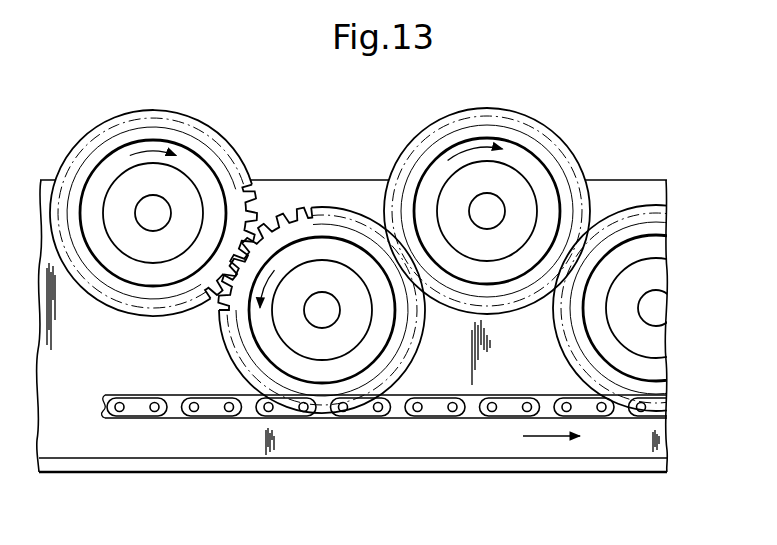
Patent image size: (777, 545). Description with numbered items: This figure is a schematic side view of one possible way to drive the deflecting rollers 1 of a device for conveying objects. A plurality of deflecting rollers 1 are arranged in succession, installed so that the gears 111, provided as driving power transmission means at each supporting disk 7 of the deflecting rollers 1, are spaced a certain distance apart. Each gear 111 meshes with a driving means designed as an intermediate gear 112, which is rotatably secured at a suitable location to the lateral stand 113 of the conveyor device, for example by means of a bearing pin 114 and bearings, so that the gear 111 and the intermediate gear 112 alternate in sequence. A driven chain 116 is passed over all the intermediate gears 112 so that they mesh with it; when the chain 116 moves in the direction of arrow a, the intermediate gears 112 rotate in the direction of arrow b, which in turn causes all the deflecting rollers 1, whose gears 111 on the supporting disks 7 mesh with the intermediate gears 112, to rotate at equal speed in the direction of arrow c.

The deflecting roller 1 is at (102, 120).
The supporting disk 7 is at (93, 190).
The gear 111 is at (193, 123).
The intermediate gear 112 is at (337, 208).
The lateral stand 113 is at (455, 473).
The bearing pin 114 is at (323, 293).
The chain 116 is at (217, 411).